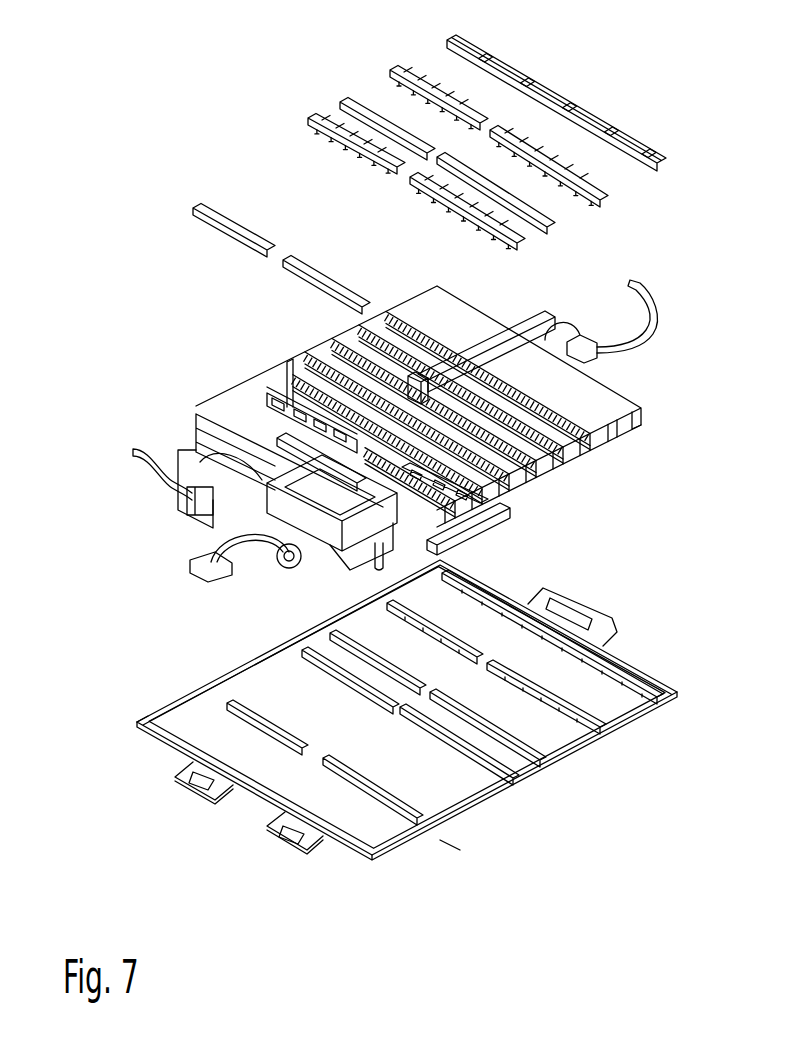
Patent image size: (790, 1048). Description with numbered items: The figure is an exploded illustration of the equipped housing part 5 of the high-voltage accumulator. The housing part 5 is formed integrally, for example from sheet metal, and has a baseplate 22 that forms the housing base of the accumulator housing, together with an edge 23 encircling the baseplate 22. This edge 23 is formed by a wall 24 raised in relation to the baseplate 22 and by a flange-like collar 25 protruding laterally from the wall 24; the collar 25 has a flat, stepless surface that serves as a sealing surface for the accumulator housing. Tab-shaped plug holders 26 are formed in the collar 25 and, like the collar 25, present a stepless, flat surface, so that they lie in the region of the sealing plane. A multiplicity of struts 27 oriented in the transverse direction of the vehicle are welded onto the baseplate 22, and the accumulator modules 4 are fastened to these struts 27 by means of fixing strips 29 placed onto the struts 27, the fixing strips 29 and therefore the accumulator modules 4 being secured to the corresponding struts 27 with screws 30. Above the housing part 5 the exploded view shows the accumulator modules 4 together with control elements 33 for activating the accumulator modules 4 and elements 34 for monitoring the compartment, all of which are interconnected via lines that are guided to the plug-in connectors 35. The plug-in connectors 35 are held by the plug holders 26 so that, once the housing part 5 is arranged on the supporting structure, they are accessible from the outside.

The accumulator module 4 is at (522, 318).
The housing part 5 is at (445, 845).
The baseplate 22 is at (450, 783).
The edge 23 is at (378, 702).
The wall 24 is at (232, 680).
The collar 25 is at (135, 728).
The plug holder 26 is at (198, 790).
The strut 27 is at (200, 205).
The fixing strip 29 is at (315, 117).
The screw 30 is at (598, 188).
The control element 33 is at (382, 476).
The element for monitoring the compartment 34 is at (487, 515).
The plug-in connector 35 is at (603, 342).